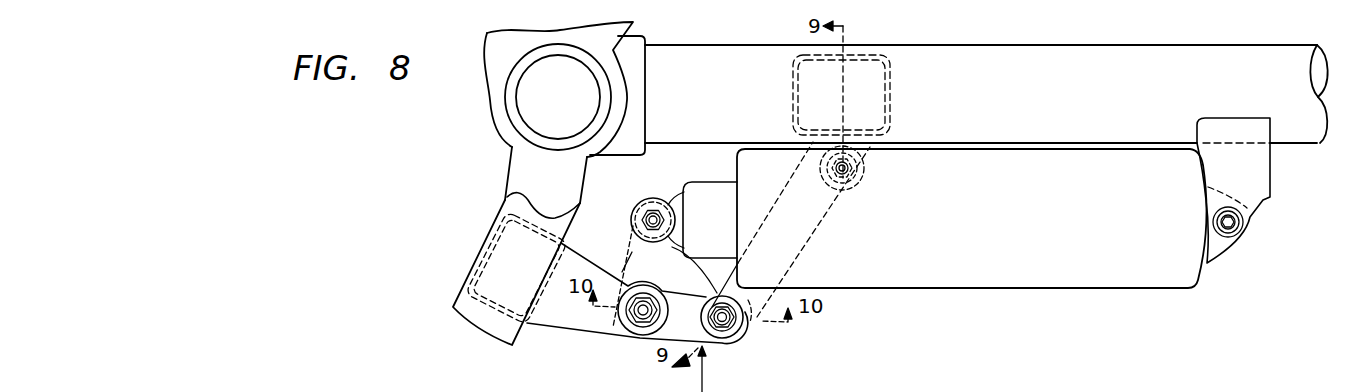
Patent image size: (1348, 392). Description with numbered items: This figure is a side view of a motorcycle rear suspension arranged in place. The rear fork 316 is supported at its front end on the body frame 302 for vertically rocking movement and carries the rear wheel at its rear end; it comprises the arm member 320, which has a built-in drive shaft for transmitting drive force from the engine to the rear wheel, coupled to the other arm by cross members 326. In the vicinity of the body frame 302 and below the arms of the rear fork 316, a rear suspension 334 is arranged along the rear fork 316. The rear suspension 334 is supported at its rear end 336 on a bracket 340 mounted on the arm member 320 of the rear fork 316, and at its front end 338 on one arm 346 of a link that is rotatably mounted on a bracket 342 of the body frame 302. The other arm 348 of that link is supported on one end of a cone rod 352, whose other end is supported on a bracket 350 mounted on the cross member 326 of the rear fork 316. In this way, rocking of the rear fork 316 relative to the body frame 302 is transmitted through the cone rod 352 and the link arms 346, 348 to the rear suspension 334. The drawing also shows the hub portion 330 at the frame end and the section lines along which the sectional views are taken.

The body frame 302 is at (461, 298).
The rear fork 316 is at (960, 44).
The arm member 320 is at (1057, 50).
The cross member 326 is at (877, 43).
The head tube housing 330 is at (640, 33).
The rear suspension 334 is at (1038, 288).
The rear end 336 is at (1212, 245).
The front end 338 is at (677, 196).
The bracket 340 is at (1257, 168).
The bracket 342 is at (544, 318).
The arm of link 346 is at (632, 250).
The arm of link 348 is at (713, 343).
The bracket 350 is at (866, 150).
The cone rod 352 is at (755, 320).